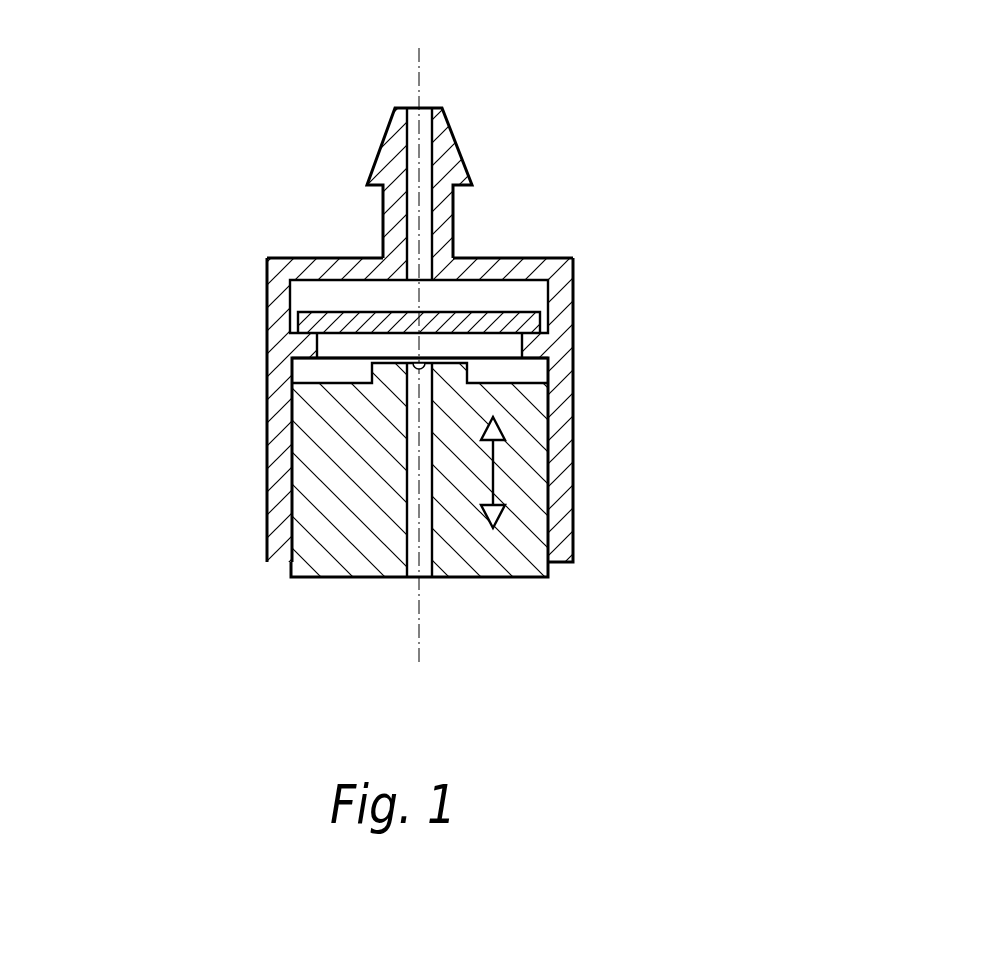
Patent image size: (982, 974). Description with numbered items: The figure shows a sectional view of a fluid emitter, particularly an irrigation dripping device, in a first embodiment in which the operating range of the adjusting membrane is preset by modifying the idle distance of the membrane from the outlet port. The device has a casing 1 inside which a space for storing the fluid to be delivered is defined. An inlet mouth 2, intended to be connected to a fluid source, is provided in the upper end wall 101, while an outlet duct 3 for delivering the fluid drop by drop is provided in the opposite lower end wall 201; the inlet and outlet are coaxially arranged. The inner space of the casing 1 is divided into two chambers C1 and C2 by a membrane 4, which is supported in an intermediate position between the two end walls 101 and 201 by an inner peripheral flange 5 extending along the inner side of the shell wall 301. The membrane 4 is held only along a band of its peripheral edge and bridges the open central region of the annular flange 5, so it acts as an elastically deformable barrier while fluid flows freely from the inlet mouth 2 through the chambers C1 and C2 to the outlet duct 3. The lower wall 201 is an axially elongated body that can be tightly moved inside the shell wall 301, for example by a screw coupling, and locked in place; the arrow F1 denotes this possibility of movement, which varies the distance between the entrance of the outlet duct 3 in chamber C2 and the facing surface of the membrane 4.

The casing 1 is at (455, 379).
The inlet mouth 2 is at (418, 107).
The outlet duct 3 is at (450, 562).
The membrane 4 is at (507, 312).
The inner peripheral flange 5 is at (305, 343).
The upper end wall 101 is at (533, 257).
The lower end wall 201 is at (510, 578).
The shell wall 301 is at (560, 412).
The first chamber C1 is at (330, 292).
The second chamber C2 is at (315, 370).
The arrow F1 is at (498, 482).